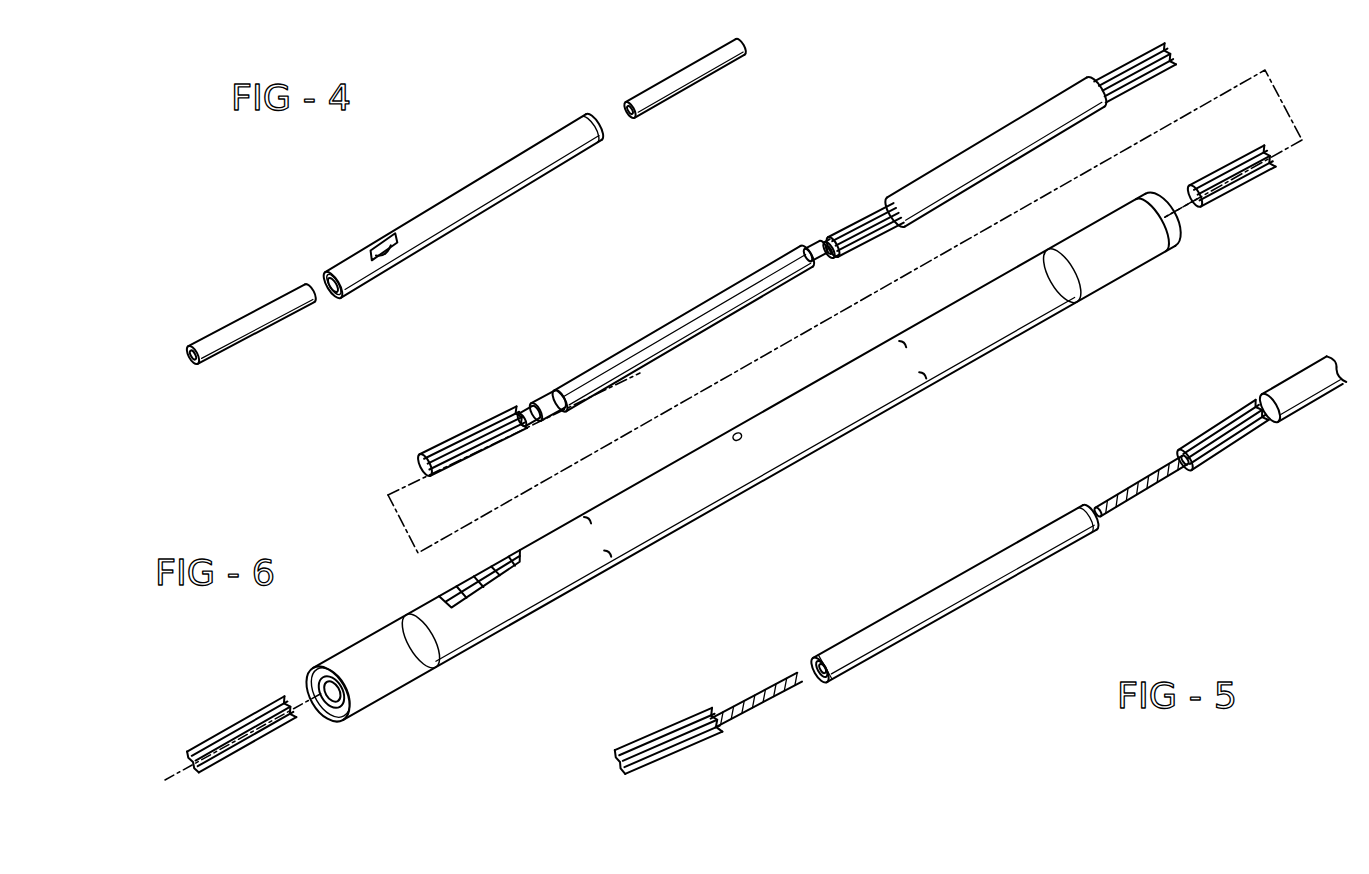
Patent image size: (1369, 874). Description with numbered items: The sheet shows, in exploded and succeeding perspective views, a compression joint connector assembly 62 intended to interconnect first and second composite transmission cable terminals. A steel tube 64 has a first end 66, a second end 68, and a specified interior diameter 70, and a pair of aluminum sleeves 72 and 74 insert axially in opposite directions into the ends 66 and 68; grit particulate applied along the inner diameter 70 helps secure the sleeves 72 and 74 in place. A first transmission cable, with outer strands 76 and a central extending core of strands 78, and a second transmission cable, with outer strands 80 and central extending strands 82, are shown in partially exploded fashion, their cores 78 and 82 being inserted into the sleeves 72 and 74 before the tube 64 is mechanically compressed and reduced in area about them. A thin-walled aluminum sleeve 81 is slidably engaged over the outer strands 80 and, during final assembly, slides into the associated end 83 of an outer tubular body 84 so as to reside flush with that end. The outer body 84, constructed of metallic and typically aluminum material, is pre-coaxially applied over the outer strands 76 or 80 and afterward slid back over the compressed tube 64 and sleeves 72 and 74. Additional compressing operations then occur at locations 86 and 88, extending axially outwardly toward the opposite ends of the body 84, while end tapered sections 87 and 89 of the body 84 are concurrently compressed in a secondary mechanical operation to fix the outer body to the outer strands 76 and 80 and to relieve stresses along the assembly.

In FIG. 6, the connector assembly 62 is at (374, 533).
In FIG. 4, the steel tube 64 is at (547, 228).
In FIG. 5, the steel tube 64 is at (948, 606).
In FIG. 4, the first end 66 is at (323, 278).
In FIG. 5, the first end 66 is at (830, 680).
In FIG. 4, the second end 68 is at (597, 125).
In FIG. 5, the second end 68 is at (1095, 530).
In FIG. 4, the interior diameter 70 is at (383, 240).
In FIG. 4, the aluminum sleeve 72 is at (250, 318).
In FIG. 5, the aluminum sleeve 72 is at (812, 665).
In FIG. 4, the aluminum sleeve 74 is at (690, 80).
In FIG. 4, the outer strands 76 is at (455, 445).
In FIG. 6, the outer strands 76 is at (225, 730).
In FIG. 5, the outer strands 76 is at (670, 765).
In FIG. 4, the central extending strands 78 is at (520, 412).
In FIG. 5, the central extending strands 78 is at (755, 700).
In FIG. 4, the outer strands 80 is at (850, 222).
In FIG. 6, the outer strands 80 is at (1243, 195).
In FIG. 5, the outer strands 80 is at (1230, 465).
In FIG. 4, the sleeve 81 is at (985, 148).
In FIG. 5, the sleeve 81 is at (1302, 407).
In FIG. 4, the central extending strands 82 is at (822, 244).
In FIG. 5, the central extending strands 82 is at (1140, 500).
In FIG. 6, the end 83 is at (1175, 232).
In FIG. 6, the outer tubular body 84 is at (779, 488).
In FIG. 6, the compressing location 86 is at (607, 560).
In FIG. 6, the end tapered section 87 is at (397, 668).
In FIG. 6, the compressing location 88 is at (927, 378).
In FIG. 6, the end tapered section 89 is at (1112, 262).